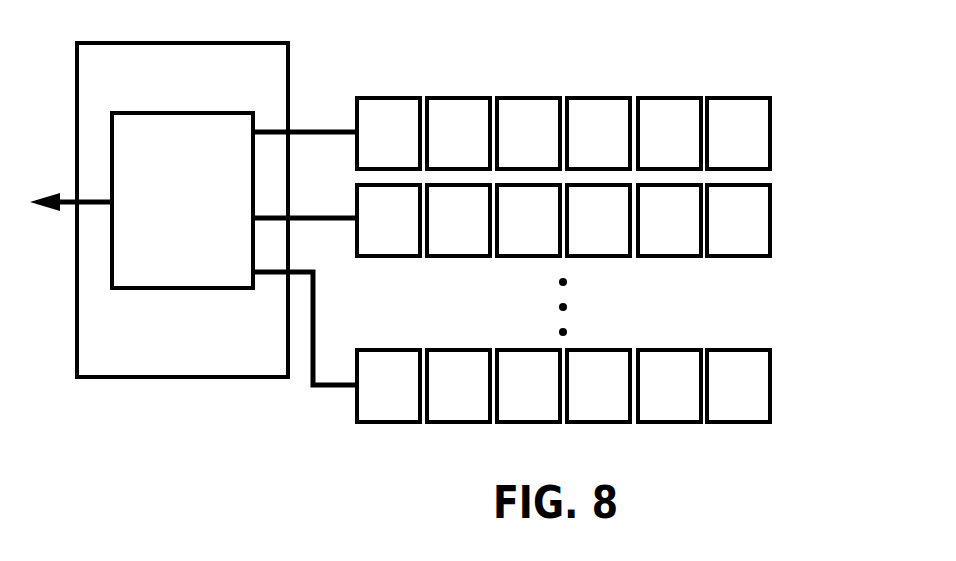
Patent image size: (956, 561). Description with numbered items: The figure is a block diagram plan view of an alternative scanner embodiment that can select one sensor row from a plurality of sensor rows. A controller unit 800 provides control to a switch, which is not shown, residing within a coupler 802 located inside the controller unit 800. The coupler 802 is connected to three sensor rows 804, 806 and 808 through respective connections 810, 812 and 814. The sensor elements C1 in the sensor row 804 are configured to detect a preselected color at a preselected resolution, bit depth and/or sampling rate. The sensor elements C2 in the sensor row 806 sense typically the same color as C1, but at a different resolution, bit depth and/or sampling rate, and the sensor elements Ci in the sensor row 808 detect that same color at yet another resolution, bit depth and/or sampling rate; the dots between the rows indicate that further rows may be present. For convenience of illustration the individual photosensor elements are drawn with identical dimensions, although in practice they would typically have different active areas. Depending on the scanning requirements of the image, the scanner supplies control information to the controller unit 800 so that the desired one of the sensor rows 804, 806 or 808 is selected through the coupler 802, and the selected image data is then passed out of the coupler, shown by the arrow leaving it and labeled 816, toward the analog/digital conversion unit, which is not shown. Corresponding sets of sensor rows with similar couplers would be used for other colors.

The controller unit 800 is at (182, 210).
The coupler 802 is at (182, 200).
The sensor row 804 is at (773, 152).
The sensor row 806 is at (773, 240).
The sensor row 808 is at (773, 405).
The connection 810 is at (304, 129).
The connection 812 is at (331, 222).
The connection 814 is at (333, 392).
The controller output 816 is at (90, 207).